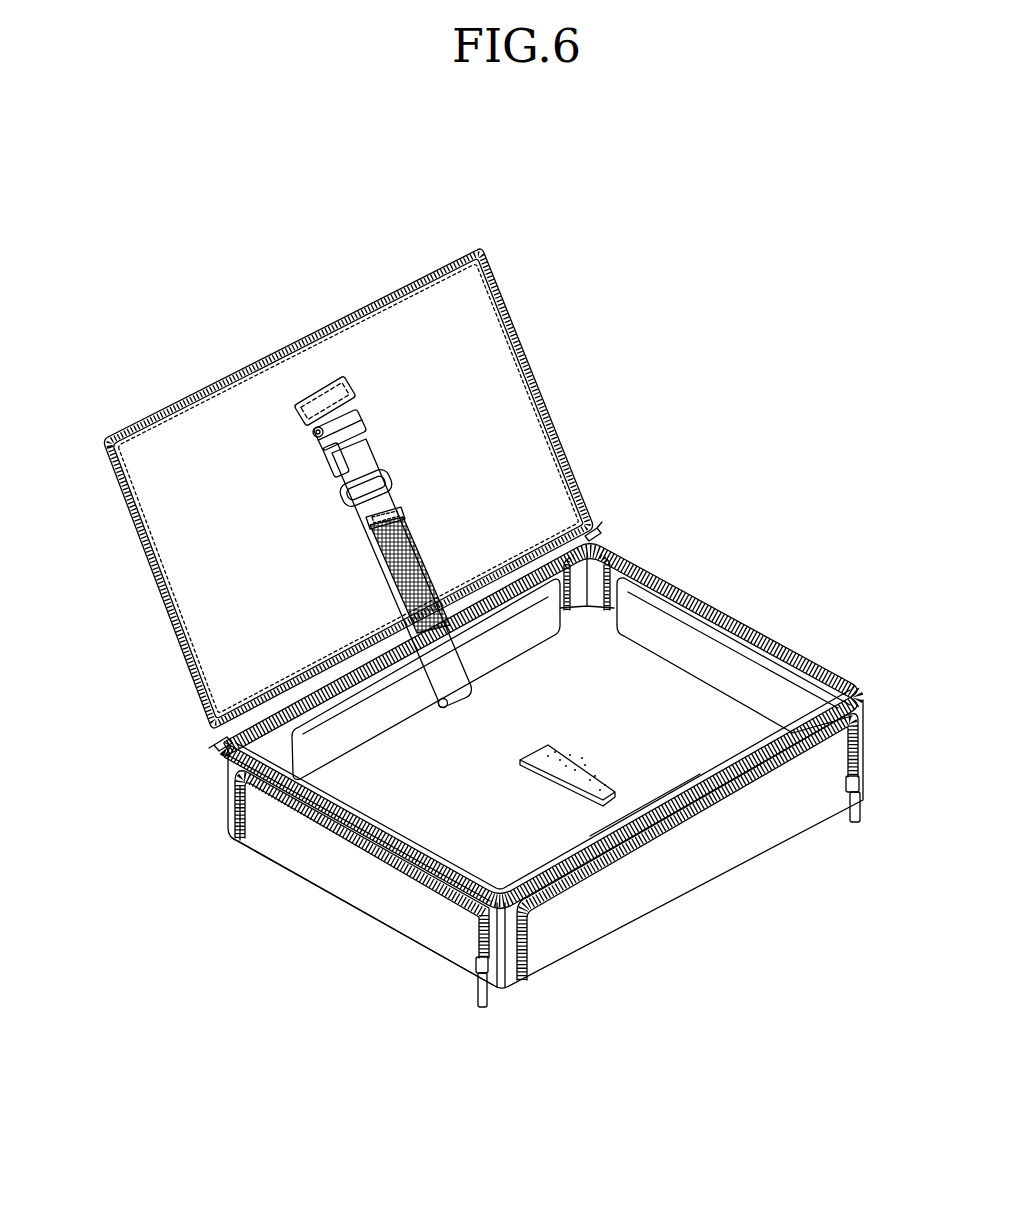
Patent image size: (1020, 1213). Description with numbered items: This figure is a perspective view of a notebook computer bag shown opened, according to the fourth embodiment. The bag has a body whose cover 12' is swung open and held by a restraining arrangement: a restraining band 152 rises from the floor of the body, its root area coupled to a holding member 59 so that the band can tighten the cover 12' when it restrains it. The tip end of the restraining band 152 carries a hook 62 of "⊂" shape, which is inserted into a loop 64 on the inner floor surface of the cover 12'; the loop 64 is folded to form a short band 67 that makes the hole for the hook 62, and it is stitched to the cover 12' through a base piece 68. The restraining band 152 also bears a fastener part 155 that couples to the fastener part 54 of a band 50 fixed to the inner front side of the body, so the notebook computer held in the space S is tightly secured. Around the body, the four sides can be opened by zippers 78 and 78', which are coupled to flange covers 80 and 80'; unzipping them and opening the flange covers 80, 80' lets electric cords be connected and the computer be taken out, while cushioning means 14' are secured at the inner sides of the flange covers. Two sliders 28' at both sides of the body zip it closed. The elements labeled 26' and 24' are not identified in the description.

The cover 12' is at (362, 488).
The lid zipper border 26' is at (327, 489).
The zipper 78' is at (464, 619).
The sliders 28' is at (370, 602).
The cushioning means 14' is at (590, 761).
The rim 24' is at (329, 832).
The flange cover 80 is at (481, 726).
The flange cover 80' is at (465, 891).
The zipper 78 is at (530, 722).
The space S is at (787, 703).
The holding member 59 is at (440, 700).
The fastener part 54 is at (573, 767).
The band 50 is at (637, 806).
The restraining band 152 is at (447, 643).
The fastener part 155 is at (412, 536).
The base piece 68 is at (338, 395).
The loop 64 is at (350, 421).
The short band 67 is at (323, 422).
The hook 62 is at (320, 453).